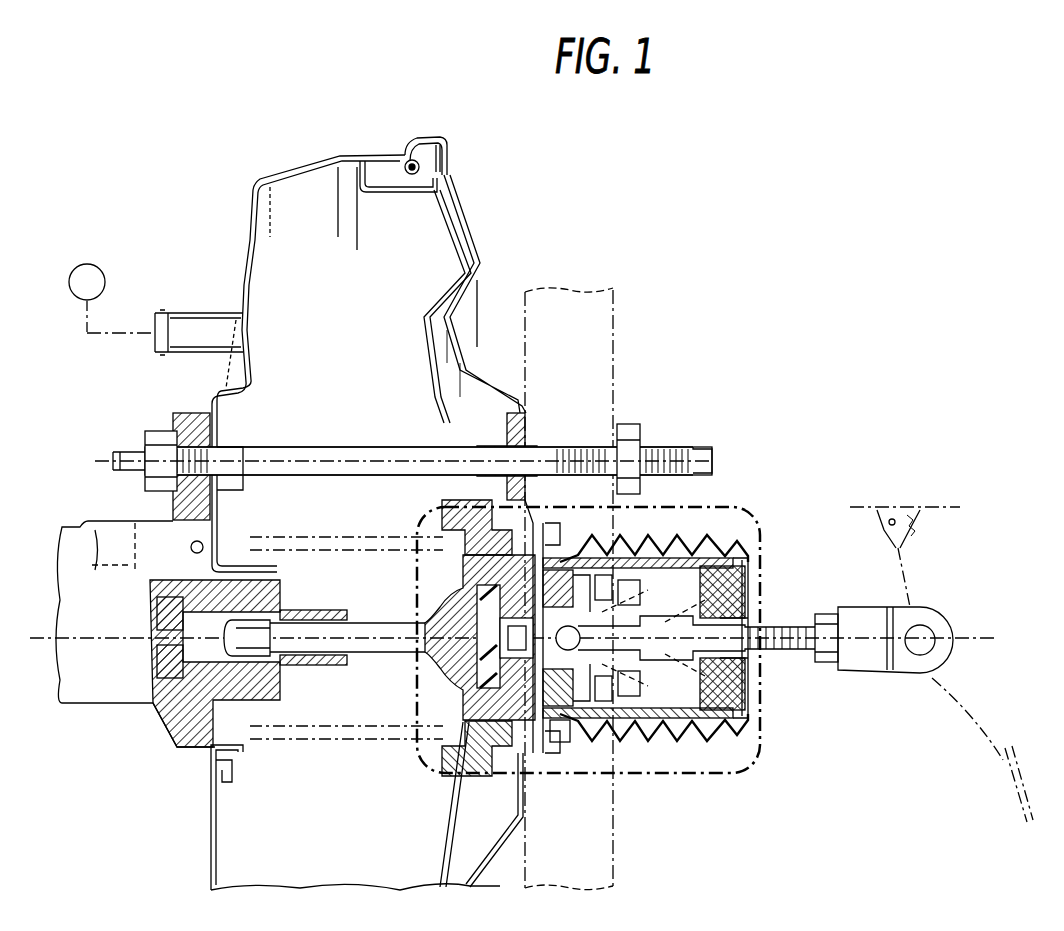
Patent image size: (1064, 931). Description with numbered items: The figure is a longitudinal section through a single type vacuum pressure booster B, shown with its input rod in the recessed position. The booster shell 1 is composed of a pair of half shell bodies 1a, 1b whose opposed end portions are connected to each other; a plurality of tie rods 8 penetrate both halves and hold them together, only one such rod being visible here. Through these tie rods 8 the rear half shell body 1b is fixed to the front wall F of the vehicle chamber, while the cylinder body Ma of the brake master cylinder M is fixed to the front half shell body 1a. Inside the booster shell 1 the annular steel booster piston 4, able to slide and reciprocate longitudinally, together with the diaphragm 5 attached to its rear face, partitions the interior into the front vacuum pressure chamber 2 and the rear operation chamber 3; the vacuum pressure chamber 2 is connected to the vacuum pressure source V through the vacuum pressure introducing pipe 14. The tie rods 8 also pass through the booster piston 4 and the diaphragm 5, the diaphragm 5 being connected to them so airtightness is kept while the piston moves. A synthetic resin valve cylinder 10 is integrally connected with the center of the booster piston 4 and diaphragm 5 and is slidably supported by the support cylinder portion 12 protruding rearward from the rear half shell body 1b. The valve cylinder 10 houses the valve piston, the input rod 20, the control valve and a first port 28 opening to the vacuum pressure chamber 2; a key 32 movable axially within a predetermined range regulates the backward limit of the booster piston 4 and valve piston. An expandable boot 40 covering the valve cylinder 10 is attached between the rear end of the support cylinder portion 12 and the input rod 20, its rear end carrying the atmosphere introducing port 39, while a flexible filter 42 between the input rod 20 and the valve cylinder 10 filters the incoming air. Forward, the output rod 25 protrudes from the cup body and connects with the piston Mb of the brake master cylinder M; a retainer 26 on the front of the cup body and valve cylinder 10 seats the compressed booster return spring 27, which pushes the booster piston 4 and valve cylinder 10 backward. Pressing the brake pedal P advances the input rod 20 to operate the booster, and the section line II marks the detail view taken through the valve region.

The booster shell 1 is at (516, 148).
The front half shell body 1a is at (448, 138).
The rear half shell body 1b is at (466, 228).
The vacuum pressure chamber 2 is at (320, 297).
The operation chamber 3 is at (492, 410).
The booster piston 4 is at (430, 301).
The diaphragm 5 is at (394, 195).
The tie rod 8 is at (311, 445).
The valve cylinder 10 is at (733, 560).
The support cylinder portion 12 is at (578, 532).
The vacuum pressure introducing pipe 14 is at (201, 313).
The input rod 20 is at (736, 621).
The output rod 25 is at (389, 628).
The retainer 26 is at (437, 690).
The booster return spring 27 is at (356, 535).
The first port 28 is at (557, 742).
The key 32 is at (536, 526).
The atmosphere introducing port 39 is at (746, 690).
The boot 40 is at (650, 740).
The filter 42 is at (719, 742).
The vacuum pressure booster B is at (226, 223).
The vacuum pressure source V is at (79, 267).
The front wall F is at (616, 337).
The brake master cylinder M is at (78, 519).
The cylinder body Ma is at (201, 704).
The piston Mb is at (160, 630).
The section line II is at (772, 751).
The brake pedal P is at (948, 681).